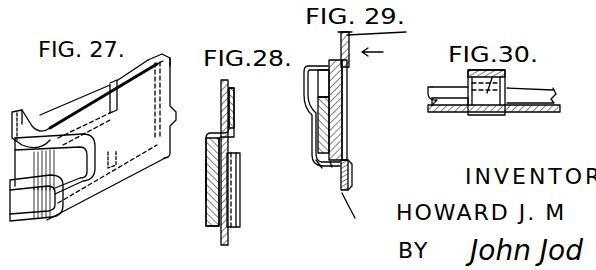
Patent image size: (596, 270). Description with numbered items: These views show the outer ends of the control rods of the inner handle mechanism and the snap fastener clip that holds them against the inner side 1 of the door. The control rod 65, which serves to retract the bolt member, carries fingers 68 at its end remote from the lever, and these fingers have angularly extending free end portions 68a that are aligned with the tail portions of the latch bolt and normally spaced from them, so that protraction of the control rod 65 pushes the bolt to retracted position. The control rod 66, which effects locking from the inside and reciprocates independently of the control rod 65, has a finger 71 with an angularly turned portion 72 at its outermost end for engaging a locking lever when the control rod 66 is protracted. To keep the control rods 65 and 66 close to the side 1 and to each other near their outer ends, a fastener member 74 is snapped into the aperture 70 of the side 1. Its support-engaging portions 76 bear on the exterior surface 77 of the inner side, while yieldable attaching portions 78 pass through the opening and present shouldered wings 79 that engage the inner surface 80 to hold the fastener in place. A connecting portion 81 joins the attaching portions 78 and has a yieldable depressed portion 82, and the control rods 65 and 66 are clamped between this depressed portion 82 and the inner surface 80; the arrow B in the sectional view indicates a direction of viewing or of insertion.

In FIG. 28, the inner side 1 is at (228, 238).
In FIG. 29, the inner side 1 is at (350, 88).
In FIG. 30, the inner side 1 is at (540, 112).
In FIG. 27, the control rod 65 is at (177, 107).
In FIG. 28, the control rod 65 is at (229, 203).
In FIG. 29, the control rod 65 is at (347, 110).
In FIG. 30, the control rod 65 is at (450, 107).
In FIG. 27, the control rod 66 is at (144, 62).
In FIG. 28, the control rod 66 is at (207, 192).
In FIG. 29, the control rod 66 is at (310, 152).
In FIG. 30, the control rod 66 is at (448, 92).
In FIG. 27, the fingers 68 is at (71, 118).
In FIG. 27, the free end portions 68a is at (32, 115).
In FIG. 28, the aperture 70 is at (232, 138).
In FIG. 29, the aperture 70 is at (348, 123).
In FIG. 27, the finger 71 is at (63, 165).
In FIG. 27, the angularly turned portion 72 is at (22, 202).
In FIG. 29, the fastener member 74 is at (353, 185).
In FIG. 29, the support-engaging portions 76 is at (350, 168).
In FIG. 30, the support-engaging portions 76 is at (488, 115).
In FIG. 29, the exterior surface 77 is at (389, 35).
In FIG. 29, the yieldable attaching portions 78 is at (321, 168).
In FIG. 30, the yieldable attaching portions 78 is at (492, 78).
In FIG. 29, the shouldered wings 79 is at (332, 167).
In FIG. 30, the shouldered wings 79 is at (540, 88).
In FIG. 29, the inner surface 80 is at (340, 40).
In FIG. 30, the inner surface 80 is at (432, 100).
In FIG. 29, the connecting portion 81 is at (307, 85).
In FIG. 29, the yieldable depressed portion 82 is at (319, 110).
In FIG. 29, the direction arrow B is at (381, 53).